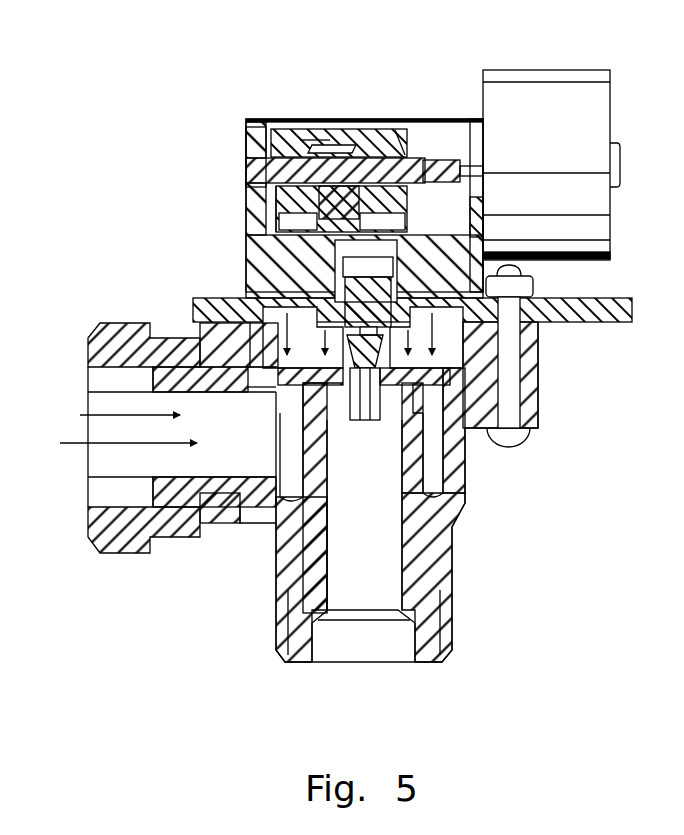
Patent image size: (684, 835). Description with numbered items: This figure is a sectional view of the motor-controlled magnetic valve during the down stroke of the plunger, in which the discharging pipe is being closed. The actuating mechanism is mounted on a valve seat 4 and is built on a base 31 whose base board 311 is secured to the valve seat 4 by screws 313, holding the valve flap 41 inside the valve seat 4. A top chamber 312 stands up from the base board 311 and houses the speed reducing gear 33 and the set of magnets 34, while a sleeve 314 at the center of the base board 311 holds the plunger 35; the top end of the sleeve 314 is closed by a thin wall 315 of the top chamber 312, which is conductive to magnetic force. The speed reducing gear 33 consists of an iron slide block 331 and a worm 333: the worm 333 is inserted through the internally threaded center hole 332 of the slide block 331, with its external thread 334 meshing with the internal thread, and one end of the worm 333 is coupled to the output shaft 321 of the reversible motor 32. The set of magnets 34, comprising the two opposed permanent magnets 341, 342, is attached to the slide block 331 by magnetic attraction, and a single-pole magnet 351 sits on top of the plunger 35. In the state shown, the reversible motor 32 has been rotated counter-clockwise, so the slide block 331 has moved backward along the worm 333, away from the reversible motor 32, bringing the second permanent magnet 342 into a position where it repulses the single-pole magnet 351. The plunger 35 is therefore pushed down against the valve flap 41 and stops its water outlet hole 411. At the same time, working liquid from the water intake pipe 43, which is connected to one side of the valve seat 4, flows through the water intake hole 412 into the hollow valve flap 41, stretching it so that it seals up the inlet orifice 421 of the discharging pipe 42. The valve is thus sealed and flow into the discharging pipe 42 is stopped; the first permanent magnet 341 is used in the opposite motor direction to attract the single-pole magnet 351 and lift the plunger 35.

The base 31 is at (193, 298).
The base board 311 is at (613, 322).
The top chamber 312 is at (247, 193).
The screws 313 is at (507, 415).
The sleeve 314 is at (440, 259).
The thin wall 315 is at (247, 242).
The reversible motor 32 is at (540, 77).
The output shaft 321 is at (462, 165).
The speed reducing gear 33 is at (420, 150).
The slide block 331 is at (378, 165).
The center hole 332 is at (306, 162).
The worm 333 is at (411, 150).
The external thread 334 is at (400, 128).
The set of magnets 34 is at (410, 200).
The first permanent magnet 341 is at (281, 165).
The second permanent magnet 342 is at (374, 219).
The plunger 35 is at (300, 290).
The single-pole magnet 351 is at (247, 260).
The valve seat 4 is at (457, 457).
The valve flap 41 is at (200, 383).
The water outlet hole 411 is at (363, 420).
The water intake hole 412 is at (303, 395).
The discharging pipe 42 is at (413, 660).
The inlet orifice 421 is at (330, 383).
The water intake pipe 43 is at (103, 507).